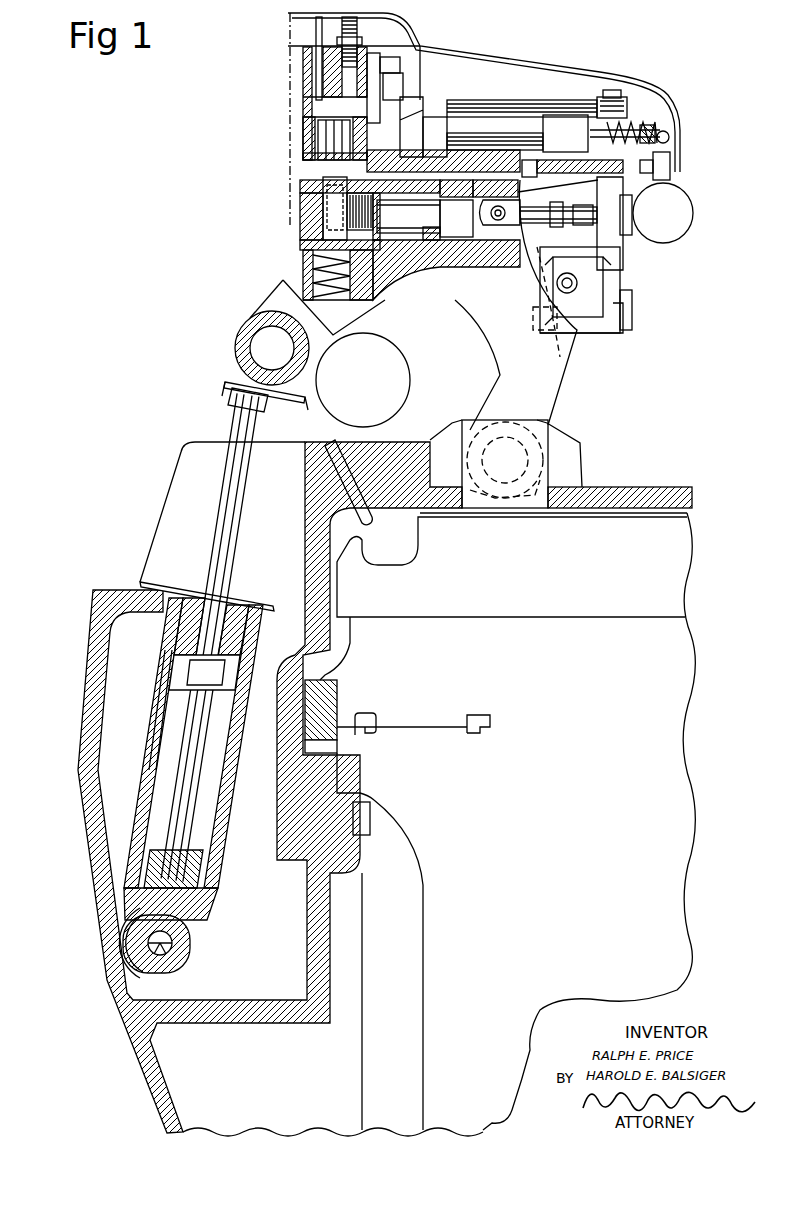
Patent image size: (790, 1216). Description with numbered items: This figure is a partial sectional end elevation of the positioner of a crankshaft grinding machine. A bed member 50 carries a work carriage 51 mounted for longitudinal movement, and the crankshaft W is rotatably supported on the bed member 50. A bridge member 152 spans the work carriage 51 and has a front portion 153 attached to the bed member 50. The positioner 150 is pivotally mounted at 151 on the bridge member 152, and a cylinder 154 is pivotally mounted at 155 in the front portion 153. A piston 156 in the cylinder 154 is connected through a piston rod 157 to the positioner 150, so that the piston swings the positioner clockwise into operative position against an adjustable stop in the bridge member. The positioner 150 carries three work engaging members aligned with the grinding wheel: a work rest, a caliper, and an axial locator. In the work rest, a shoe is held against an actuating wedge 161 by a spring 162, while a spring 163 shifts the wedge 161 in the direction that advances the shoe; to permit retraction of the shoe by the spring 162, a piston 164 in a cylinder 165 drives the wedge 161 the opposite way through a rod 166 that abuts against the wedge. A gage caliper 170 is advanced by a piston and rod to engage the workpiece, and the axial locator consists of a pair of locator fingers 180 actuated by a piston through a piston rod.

The bed member 50 is at (500, 1108).
The work carriage 51 is at (672, 585).
The positioner 150 is at (552, 380).
The pivot 151 is at (523, 453).
The bridge member 152 is at (410, 440).
The front portion 153 is at (78, 802).
The cylinder 154 is at (222, 840).
The pivot 155 is at (118, 988).
The piston 156 is at (167, 647).
The piston rod 157 is at (247, 420).
The actuating wedge 161 is at (327, 197).
The spring 162 is at (388, 281).
The spring 163 is at (310, 260).
The piston 164 is at (303, 140).
The cylinder 165 is at (305, 162).
The rod 166 is at (300, 173).
The gage caliper 170 is at (640, 250).
The locator fingers 180 is at (673, 176).
The crankshaft W is at (688, 210).